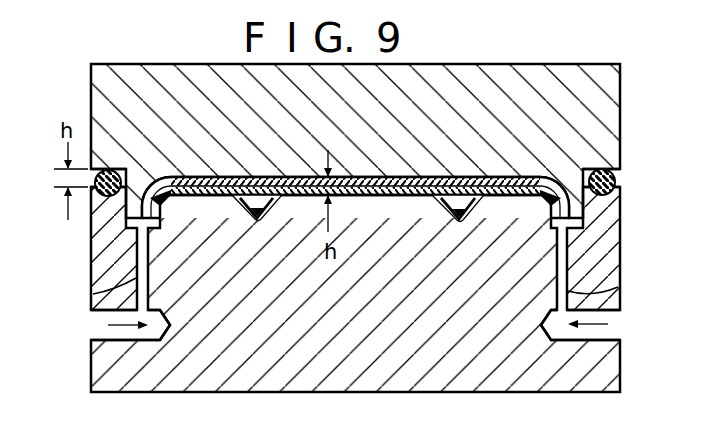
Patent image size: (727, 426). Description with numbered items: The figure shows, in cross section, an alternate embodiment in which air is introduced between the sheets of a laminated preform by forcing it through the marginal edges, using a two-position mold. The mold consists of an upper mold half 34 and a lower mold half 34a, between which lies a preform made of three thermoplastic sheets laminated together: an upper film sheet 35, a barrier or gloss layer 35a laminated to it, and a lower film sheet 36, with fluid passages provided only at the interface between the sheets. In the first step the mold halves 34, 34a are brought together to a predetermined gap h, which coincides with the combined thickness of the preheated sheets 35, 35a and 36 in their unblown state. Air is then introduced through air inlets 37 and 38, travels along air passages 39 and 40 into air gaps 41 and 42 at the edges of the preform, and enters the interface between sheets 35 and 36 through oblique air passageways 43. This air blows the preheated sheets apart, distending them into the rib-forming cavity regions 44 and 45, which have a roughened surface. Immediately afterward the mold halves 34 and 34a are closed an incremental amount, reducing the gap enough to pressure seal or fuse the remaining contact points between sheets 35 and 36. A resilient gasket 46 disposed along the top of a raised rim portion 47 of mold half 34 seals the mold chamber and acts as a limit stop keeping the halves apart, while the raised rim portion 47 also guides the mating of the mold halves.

The mold half 34 is at (622, 104).
The mold half 34a is at (620, 374).
The upper film sheet 35 is at (242, 180).
The barrier or gloss layer 35a is at (290, 182).
The lower film sheet 36 is at (243, 206).
The air inlet 37 is at (95, 326).
The air inlet 38 is at (620, 327).
The air passage 39 is at (93, 293).
The air passage 40 is at (620, 284).
The air gap 41 is at (124, 228).
The air gap 42 is at (620, 224).
The air passageway 43 is at (372, 196).
The rib-forming cavity region 44 is at (258, 223).
The rib-forming cavity region 45 is at (469, 207).
The resilient gasket 46 is at (120, 173).
The raised rim portion 47 is at (91, 205).